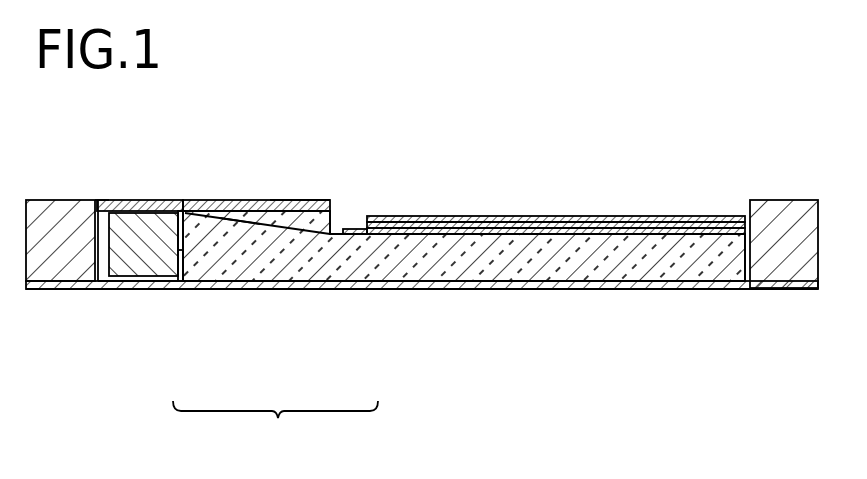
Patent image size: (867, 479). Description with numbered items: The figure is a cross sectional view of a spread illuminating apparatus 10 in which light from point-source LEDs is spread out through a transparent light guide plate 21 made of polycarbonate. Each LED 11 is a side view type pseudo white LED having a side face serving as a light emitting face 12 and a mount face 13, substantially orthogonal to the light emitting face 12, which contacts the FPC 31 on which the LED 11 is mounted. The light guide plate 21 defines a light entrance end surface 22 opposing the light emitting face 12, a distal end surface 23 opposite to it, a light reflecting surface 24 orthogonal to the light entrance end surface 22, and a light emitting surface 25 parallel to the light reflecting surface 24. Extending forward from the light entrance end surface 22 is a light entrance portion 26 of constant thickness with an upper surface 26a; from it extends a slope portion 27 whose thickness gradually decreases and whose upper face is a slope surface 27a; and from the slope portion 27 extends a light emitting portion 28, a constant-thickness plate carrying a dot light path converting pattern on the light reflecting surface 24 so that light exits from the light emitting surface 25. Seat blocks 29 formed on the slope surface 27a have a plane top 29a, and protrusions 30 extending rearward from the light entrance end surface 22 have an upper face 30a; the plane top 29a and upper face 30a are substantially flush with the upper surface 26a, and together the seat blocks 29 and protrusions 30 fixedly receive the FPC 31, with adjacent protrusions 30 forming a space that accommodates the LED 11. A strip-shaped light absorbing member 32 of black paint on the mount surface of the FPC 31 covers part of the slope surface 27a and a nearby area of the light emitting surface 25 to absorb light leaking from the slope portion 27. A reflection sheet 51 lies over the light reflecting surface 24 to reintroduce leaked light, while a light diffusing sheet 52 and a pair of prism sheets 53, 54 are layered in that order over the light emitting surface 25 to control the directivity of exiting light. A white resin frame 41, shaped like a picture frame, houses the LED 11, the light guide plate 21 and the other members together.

The spread illuminating apparatus 10 is at (630, 100).
The LED 11 is at (122, 258).
The light emitting face 12 is at (188, 258).
The mount face 13 is at (143, 200).
The light guide plate 21 is at (275, 426).
The light entrance end surface 22 is at (185, 252).
The distal end surface 23 is at (747, 270).
The light reflecting surface 24 is at (505, 282).
The light emitting surface 25 is at (343, 229).
The light entrance portion 26 is at (230, 250).
The upper surface 26a is at (186, 212).
The slope portion 27 is at (228, 255).
The slope surface 27a is at (233, 217).
The light emitting portion 28 is at (428, 250).
The seat block 29 is at (313, 222).
The plane top 29a is at (282, 201).
The protrusion 30 is at (103, 257).
The upper face 30a is at (100, 200).
The FPC 31 is at (123, 200).
The light absorbing member 32 is at (232, 209).
The frame 41 is at (65, 207).
The reflection sheet 51 is at (613, 284).
The light diffusing sheet 52 is at (590, 231).
The prism sheet 53 is at (530, 223).
The prism sheet 54 is at (478, 216).